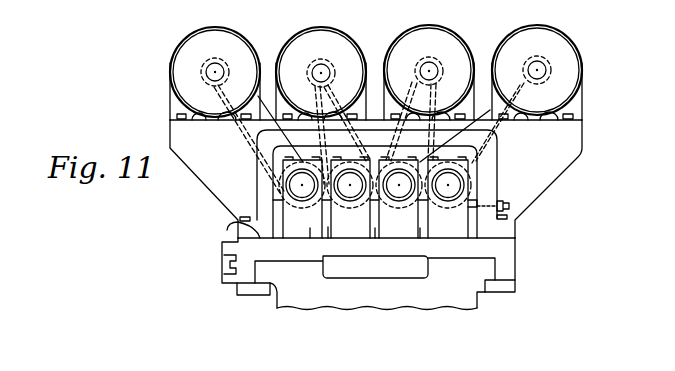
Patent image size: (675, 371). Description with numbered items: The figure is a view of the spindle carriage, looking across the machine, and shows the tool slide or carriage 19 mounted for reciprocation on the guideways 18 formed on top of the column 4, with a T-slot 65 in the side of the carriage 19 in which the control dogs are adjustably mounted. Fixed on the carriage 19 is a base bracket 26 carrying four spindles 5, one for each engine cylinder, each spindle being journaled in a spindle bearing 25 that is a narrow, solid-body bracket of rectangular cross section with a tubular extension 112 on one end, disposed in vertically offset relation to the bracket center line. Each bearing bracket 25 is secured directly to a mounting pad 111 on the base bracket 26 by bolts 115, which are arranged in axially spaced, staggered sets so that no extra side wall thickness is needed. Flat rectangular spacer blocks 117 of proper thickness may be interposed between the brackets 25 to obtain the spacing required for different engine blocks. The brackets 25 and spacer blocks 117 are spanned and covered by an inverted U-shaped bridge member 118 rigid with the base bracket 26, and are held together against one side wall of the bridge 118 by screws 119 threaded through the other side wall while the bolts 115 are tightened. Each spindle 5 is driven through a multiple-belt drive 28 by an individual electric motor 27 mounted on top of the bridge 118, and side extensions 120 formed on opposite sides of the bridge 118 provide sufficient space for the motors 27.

The electric motor 27 is at (297, 36).
The base bracket 26 is at (585, 130).
The side extension 120 is at (200, 184).
The multiple-belt drive 28 is at (241, 140).
The bolt 115 is at (411, 121).
The tubular extension 112 is at (283, 163).
The bridge member 118 is at (270, 190).
The screw 119 is at (505, 202).
The mounting pad 111 is at (227, 230).
The spindle 5 is at (302, 190).
The spindle bearing 25 is at (310, 234).
The spacer block 117 is at (331, 238).
The tool carriage 19 is at (515, 242).
The guideway 18 is at (488, 267).
The T-slot 65 is at (223, 265).
The column 4 is at (330, 302).